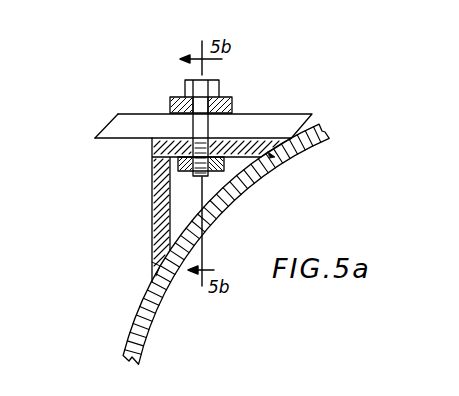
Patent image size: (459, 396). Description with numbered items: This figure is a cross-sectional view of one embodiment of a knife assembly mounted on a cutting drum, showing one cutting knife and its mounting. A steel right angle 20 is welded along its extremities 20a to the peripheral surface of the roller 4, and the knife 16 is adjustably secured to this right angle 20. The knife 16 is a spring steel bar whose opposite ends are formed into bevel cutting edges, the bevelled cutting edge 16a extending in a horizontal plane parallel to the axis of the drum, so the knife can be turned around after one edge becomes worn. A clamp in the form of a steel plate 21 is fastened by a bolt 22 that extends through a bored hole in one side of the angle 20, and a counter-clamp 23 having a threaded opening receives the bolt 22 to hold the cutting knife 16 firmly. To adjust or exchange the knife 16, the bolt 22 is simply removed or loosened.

The roller 4 is at (131, 328).
The knife 16 is at (133, 123).
The cutting edge 16a is at (95, 138).
The steel right angle 20 is at (151, 224).
The extremity 20a is at (152, 272).
The steel plate 21 is at (170, 97).
The bolt 22 is at (205, 88).
The counter-clamp 23 is at (152, 169).